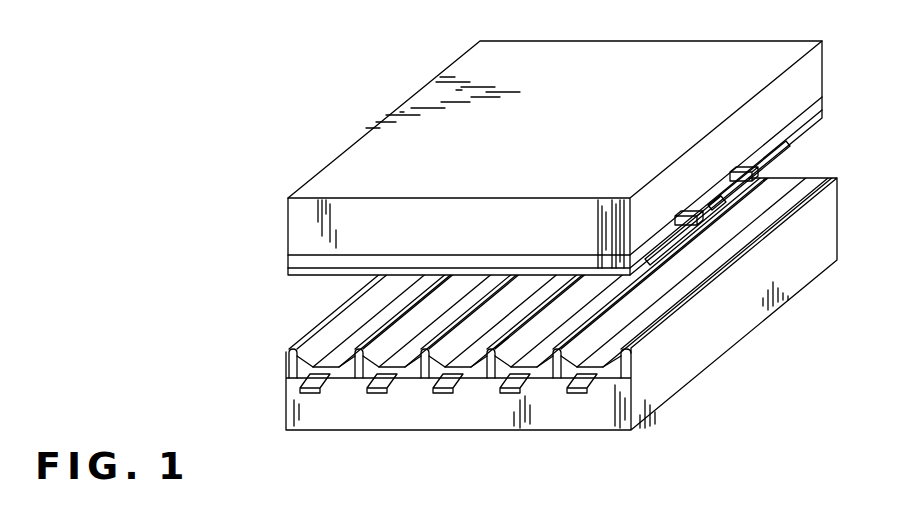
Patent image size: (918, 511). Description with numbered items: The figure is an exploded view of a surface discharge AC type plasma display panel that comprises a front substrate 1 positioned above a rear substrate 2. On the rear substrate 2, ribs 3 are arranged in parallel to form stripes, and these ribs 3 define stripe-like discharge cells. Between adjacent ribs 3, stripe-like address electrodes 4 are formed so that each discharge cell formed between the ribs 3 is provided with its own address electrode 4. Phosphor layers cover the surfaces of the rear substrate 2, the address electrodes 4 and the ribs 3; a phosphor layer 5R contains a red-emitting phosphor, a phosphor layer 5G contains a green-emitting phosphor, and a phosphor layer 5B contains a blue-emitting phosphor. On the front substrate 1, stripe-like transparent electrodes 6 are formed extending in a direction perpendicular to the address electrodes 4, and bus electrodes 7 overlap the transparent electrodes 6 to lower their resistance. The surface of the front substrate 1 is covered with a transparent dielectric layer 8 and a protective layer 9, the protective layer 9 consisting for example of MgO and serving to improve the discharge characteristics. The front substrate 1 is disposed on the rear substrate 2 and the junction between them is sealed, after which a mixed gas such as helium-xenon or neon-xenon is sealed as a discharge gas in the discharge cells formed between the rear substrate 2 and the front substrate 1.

The front substrate 1 is at (662, 30).
The rear substrate 2 is at (556, 437).
The ribs 3 is at (667, 340).
The address electrodes 4 is at (572, 386).
The phosphor layer 5R is at (345, 380).
The phosphor layer 5G is at (410, 380).
The phosphor layer 5B is at (475, 380).
The transparent electrodes 6 is at (703, 192).
The bus electrodes 7 is at (662, 180).
The transparent dielectric layer 8 is at (288, 262).
The protective layer 9 is at (288, 270).